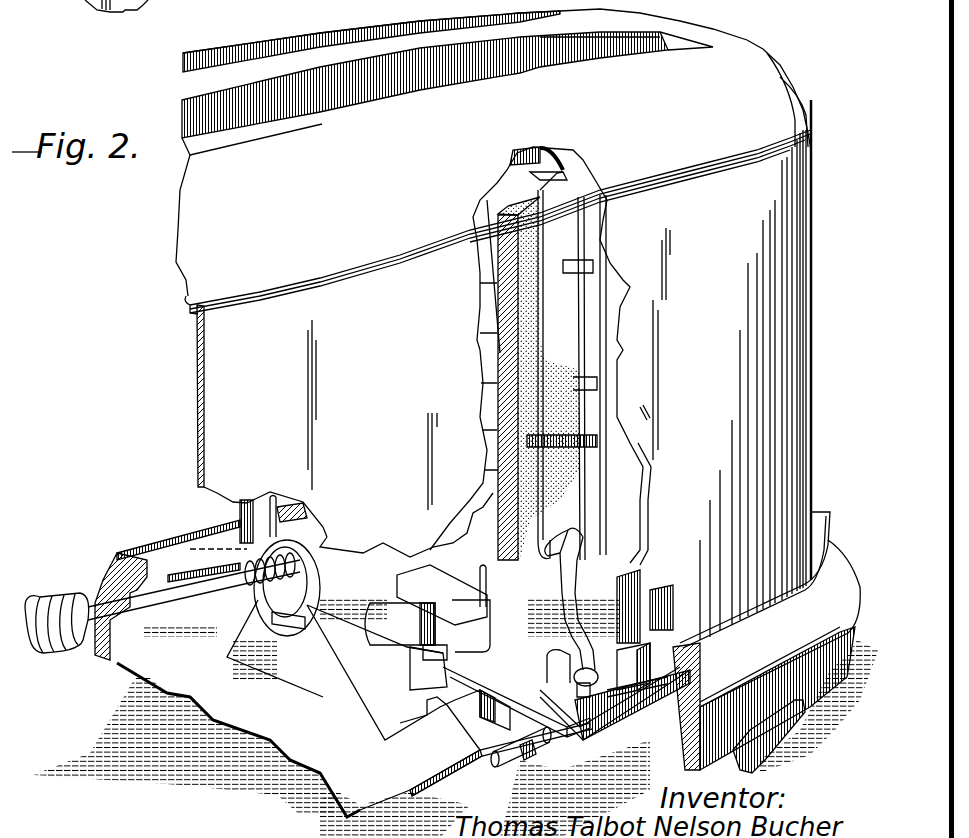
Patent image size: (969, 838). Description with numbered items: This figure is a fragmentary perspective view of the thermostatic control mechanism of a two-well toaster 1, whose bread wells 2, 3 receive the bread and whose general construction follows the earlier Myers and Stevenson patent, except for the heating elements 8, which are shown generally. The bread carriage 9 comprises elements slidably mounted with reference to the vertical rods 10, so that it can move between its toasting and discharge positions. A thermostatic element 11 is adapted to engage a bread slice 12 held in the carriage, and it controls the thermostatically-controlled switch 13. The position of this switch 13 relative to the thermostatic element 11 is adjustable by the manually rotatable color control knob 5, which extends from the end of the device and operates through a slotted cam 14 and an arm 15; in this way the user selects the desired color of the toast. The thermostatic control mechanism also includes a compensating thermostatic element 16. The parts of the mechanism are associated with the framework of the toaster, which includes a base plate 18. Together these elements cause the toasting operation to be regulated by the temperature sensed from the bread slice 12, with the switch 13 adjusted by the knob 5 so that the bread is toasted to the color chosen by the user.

The toaster 1 is at (217, 440).
The bread well 2 is at (318, 36).
The bread well 3 is at (433, 75).
The color control knob 5 is at (50, 603).
The heating elements 8 is at (483, 315).
The bread carriage 9 is at (280, 518).
The vertical rods 10 is at (320, 557).
The thermostatic element 11 is at (547, 388).
The bread slice 12 is at (513, 367).
The thermostatically-controlled switch 13 is at (560, 635).
The slotted cam 14 is at (290, 630).
The arm 15 is at (370, 663).
The compensating thermostatic element 16 is at (460, 723).
The base plate 18 is at (320, 790).